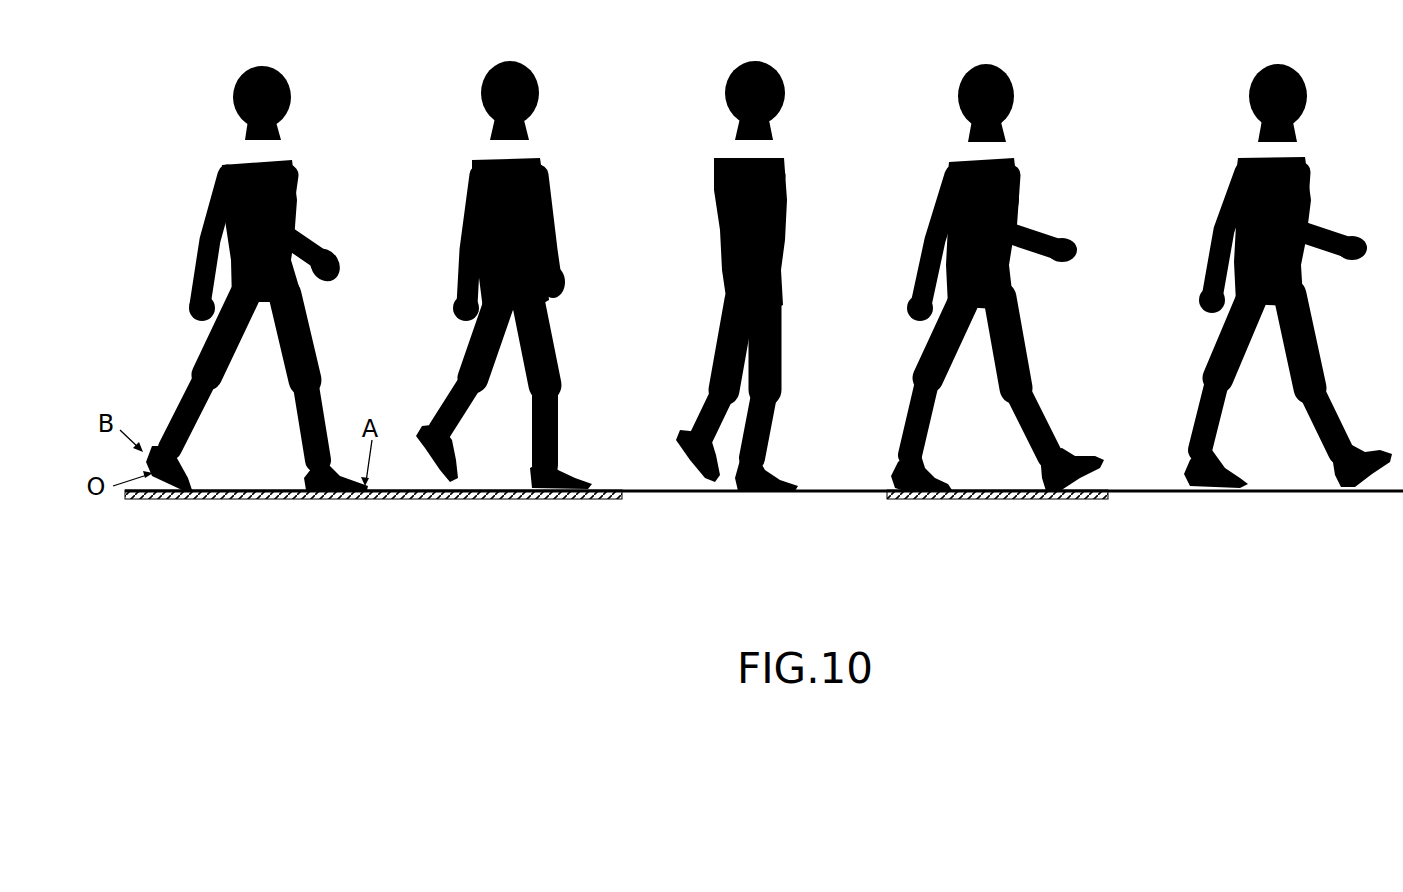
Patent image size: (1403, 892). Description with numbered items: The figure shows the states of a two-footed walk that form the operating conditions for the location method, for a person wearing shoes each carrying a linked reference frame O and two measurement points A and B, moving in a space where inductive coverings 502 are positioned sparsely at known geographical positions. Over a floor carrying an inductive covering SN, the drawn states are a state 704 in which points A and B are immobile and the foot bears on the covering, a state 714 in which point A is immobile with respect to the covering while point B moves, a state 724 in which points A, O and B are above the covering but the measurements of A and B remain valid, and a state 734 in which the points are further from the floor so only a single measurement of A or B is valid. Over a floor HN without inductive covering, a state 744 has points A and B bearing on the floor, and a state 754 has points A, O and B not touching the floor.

The inductive covering 502 is at (272, 499).
The bearing state on inductive covering 704 is at (448, 502).
The partial bearing state on inductive covering 714 is at (549, 496).
The oscillating state above inductive covering with valid measurements 724 is at (1070, 497).
The oscillating state further above inductive covering 734 is at (442, 485).
The bearing state on floor without inductive covering 744 is at (766, 502).
The oscillating state above floor without inductive covering 754 is at (1032, 488).